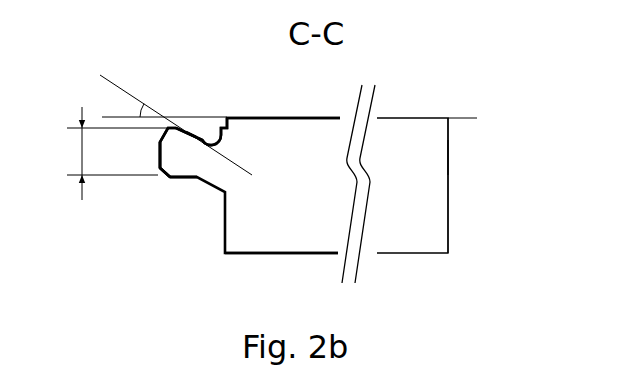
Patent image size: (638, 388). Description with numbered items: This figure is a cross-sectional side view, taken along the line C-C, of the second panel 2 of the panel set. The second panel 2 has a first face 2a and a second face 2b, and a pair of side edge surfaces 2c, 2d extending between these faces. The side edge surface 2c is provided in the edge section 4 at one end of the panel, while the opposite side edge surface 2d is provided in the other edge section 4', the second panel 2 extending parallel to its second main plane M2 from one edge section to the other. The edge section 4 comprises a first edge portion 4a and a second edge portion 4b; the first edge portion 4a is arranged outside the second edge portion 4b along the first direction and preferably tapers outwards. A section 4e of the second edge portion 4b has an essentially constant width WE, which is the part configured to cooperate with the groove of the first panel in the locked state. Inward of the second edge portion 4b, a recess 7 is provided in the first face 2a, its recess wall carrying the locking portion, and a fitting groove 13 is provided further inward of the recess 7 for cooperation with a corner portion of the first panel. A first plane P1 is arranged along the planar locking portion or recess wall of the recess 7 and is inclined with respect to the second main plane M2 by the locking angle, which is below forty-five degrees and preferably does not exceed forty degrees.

The second panel 2 is at (292, 200).
The first face 2a is at (298, 118).
The second face 2b is at (288, 255).
The side edge surface 2c is at (158, 163).
The side edge surface 2d is at (448, 198).
The edge section 4 is at (151, 148).
The first edge portion 4a is at (161, 175).
The second edge portion 4b is at (177, 178).
The section 4e is at (188, 131).
The recess 7 is at (195, 128).
The fitting groove 13 is at (221, 117).
The edge section 4' is at (480, 157).
The second main plane M2 is at (306, 119).
The first plane P1 is at (164, 117).
The constant width WE is at (107, 153).